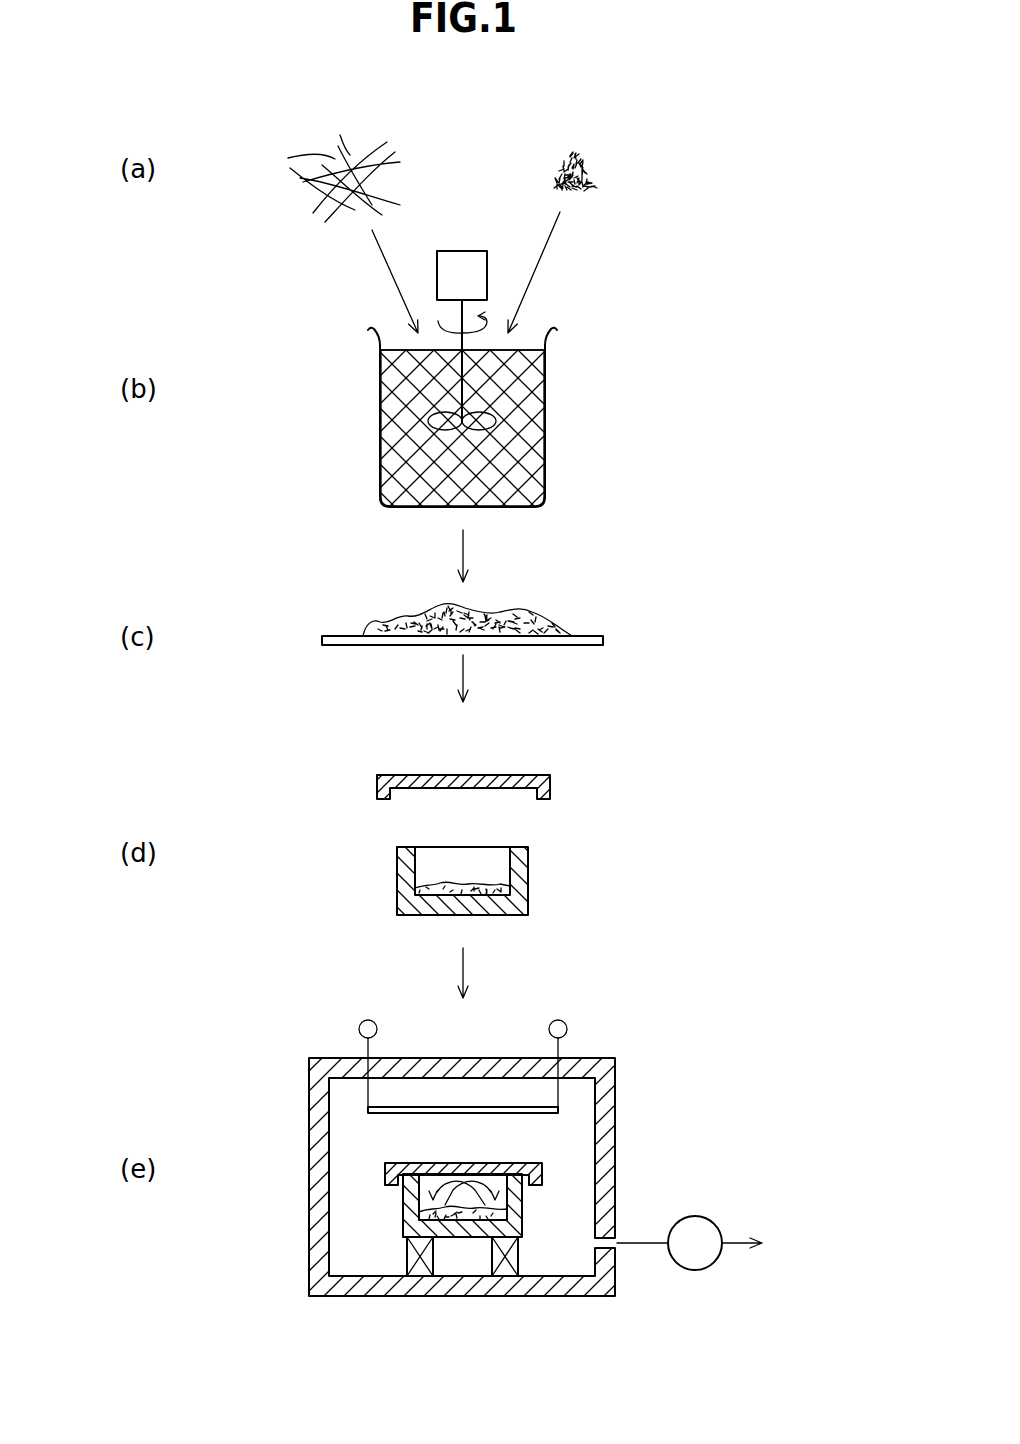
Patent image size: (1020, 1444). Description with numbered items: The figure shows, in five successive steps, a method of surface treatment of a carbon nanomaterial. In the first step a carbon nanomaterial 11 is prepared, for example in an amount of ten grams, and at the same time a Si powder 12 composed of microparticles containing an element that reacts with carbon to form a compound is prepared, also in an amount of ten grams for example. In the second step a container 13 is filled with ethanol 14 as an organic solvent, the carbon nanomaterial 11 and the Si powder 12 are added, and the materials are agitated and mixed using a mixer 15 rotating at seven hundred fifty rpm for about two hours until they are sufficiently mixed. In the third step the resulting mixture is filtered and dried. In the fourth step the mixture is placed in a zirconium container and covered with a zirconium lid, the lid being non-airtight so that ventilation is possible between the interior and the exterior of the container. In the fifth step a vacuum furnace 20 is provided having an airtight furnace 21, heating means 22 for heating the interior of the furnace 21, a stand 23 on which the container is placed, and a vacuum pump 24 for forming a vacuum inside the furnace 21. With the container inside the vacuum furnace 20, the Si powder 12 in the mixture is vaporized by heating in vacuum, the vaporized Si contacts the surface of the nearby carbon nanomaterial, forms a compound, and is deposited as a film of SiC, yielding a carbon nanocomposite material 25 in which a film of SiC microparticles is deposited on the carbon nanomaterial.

The carbon nanomaterial 11 is at (350, 148).
The Si powder 12 is at (573, 148).
The container 13 is at (445, 386).
The ethanol 14 is at (527, 352).
The mixer 15 is at (461, 262).
The vacuum furnace 20 is at (485, 1169).
The airtight furnace 21 is at (607, 1125).
The heating means 22 is at (482, 1105).
The stand 23 is at (492, 1257).
The vacuum pump 24 is at (695, 1216).
The carbon nanocomposite material 25 is at (403, 1208).